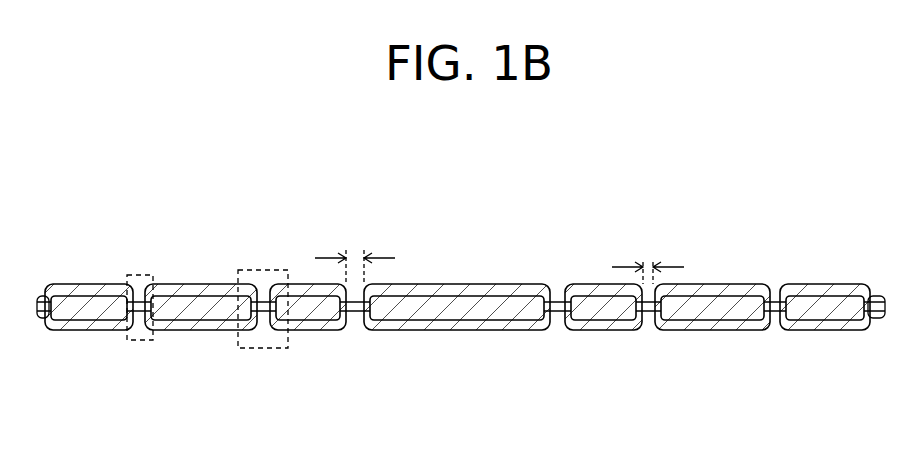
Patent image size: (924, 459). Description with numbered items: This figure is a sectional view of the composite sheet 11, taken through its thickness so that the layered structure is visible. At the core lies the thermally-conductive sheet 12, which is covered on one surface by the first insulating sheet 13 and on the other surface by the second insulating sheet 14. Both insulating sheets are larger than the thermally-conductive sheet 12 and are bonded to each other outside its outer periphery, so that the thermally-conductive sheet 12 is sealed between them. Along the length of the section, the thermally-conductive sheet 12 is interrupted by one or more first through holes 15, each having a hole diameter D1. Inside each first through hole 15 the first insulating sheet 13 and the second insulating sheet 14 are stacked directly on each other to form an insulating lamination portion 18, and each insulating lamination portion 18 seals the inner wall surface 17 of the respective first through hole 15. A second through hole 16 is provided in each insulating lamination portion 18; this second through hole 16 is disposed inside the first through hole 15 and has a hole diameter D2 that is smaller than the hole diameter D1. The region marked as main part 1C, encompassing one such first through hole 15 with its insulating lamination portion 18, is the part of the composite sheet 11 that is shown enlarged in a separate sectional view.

The composite sheet 11 is at (843, 252).
The thermally-conductive sheet 12 is at (717, 303).
The first insulating sheet 13 is at (483, 285).
The second insulating sheet 14 is at (393, 330).
The first through hole 15 is at (557, 331).
The second through hole 16 is at (652, 331).
The inner wall surface 17 is at (775, 331).
The insulating lamination portion 18 is at (140, 275).
The main part 1C is at (263, 348).
The hole diameter of first through hole D1 is at (355, 253).
The hole diameter of second through hole D2 is at (648, 258).